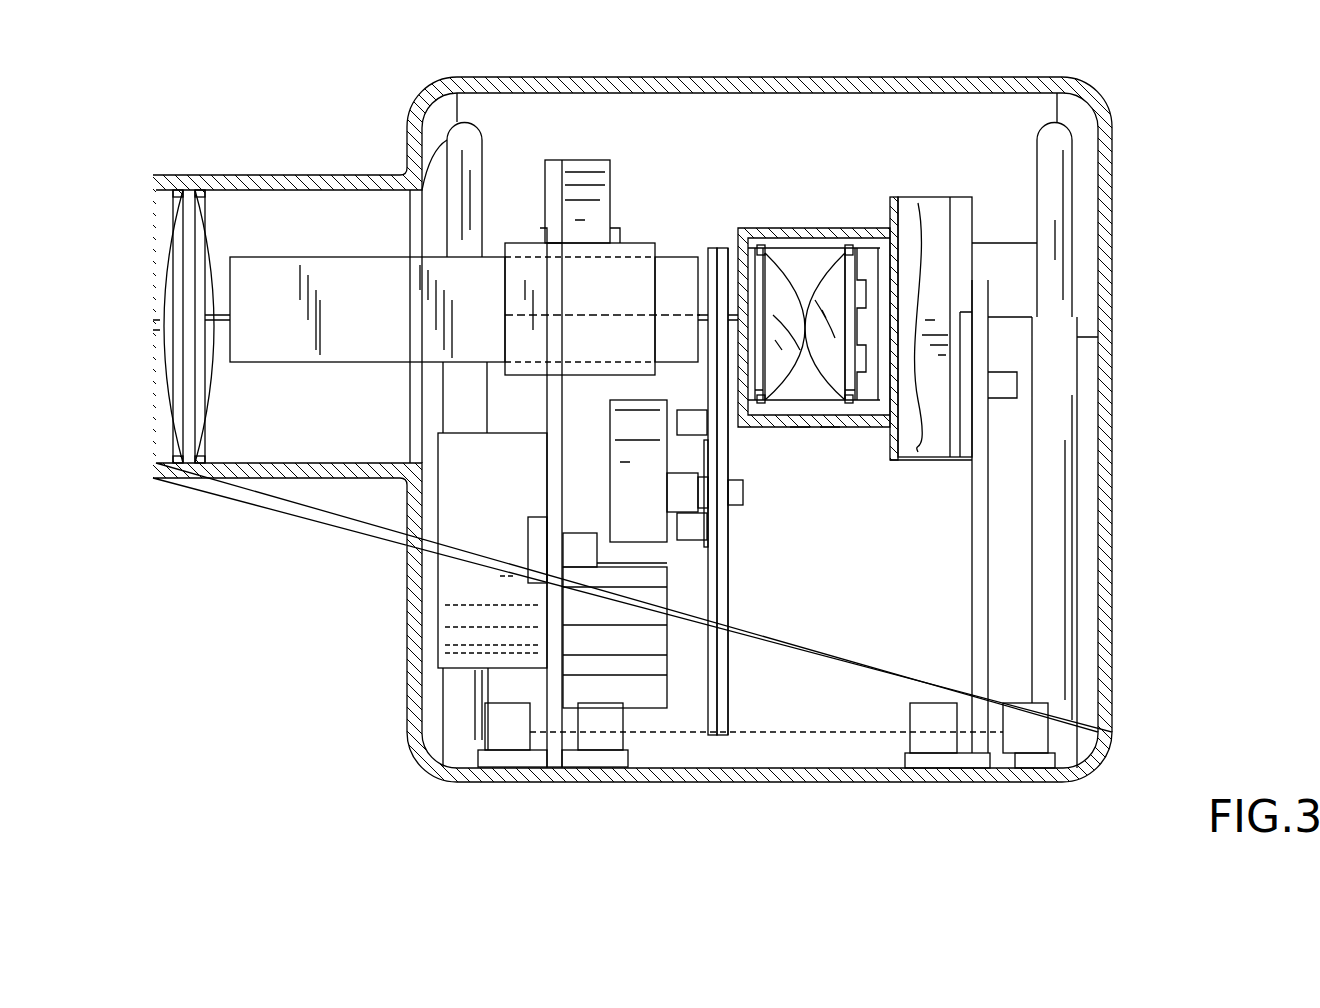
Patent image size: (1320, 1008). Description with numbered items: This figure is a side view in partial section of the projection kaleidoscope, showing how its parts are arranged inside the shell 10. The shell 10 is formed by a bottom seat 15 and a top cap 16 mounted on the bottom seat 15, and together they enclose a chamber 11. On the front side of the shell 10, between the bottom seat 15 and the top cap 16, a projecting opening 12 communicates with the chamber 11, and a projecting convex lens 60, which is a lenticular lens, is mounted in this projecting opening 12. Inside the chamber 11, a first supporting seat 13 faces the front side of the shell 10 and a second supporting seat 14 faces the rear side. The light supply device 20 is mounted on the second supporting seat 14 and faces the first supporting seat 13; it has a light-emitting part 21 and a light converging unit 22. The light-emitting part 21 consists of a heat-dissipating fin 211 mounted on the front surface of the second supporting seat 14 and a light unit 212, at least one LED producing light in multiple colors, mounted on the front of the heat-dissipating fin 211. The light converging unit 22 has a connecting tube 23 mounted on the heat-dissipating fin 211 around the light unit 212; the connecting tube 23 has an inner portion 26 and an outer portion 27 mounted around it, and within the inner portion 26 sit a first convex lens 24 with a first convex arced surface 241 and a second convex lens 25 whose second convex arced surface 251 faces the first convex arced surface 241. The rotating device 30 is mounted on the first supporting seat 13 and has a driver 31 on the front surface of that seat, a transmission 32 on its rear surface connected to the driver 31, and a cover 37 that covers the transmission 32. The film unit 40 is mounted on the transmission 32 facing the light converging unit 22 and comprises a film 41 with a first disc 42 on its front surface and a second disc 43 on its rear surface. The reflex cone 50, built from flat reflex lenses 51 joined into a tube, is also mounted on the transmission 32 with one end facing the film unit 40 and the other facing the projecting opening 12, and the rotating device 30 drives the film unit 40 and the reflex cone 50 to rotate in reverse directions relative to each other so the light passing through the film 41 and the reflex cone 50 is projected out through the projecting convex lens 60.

The shell 10 is at (1128, 548).
The chamber 11 is at (785, 183).
The projecting opening 12 is at (183, 456).
The first supporting seat 13 is at (553, 728).
The second supporting seat 14 is at (980, 738).
The bottom seat 15 is at (1107, 596).
The top cap 16 is at (1100, 118).
The light supply device 20 is at (962, 356).
The light-emitting part 21 is at (911, 472).
The heat-dissipating fin 211 is at (893, 462).
The light unit 212 is at (894, 284).
The light converging unit 22 is at (793, 335).
The connecting tube 23 is at (736, 229).
The first convex lens 24 is at (875, 258).
The first convex arced surface 241 is at (830, 290).
The second convex lens 25 is at (736, 257).
The second convex arced surface 251 is at (782, 292).
The inner portion 26 is at (800, 430).
The outer portion 27 is at (830, 430).
The rotating device 30 is at (661, 474).
The driver 31 is at (468, 597).
The transmission 32 is at (650, 710).
The cover 37 is at (585, 178).
The film unit 40 is at (735, 559).
The film 41 is at (717, 722).
The first disc 42 is at (712, 720).
The second disc 43 is at (728, 627).
The reflex cone 50 is at (578, 280).
The flat reflex lens 51 is at (292, 355).
The projecting convex lens 60 is at (185, 240).